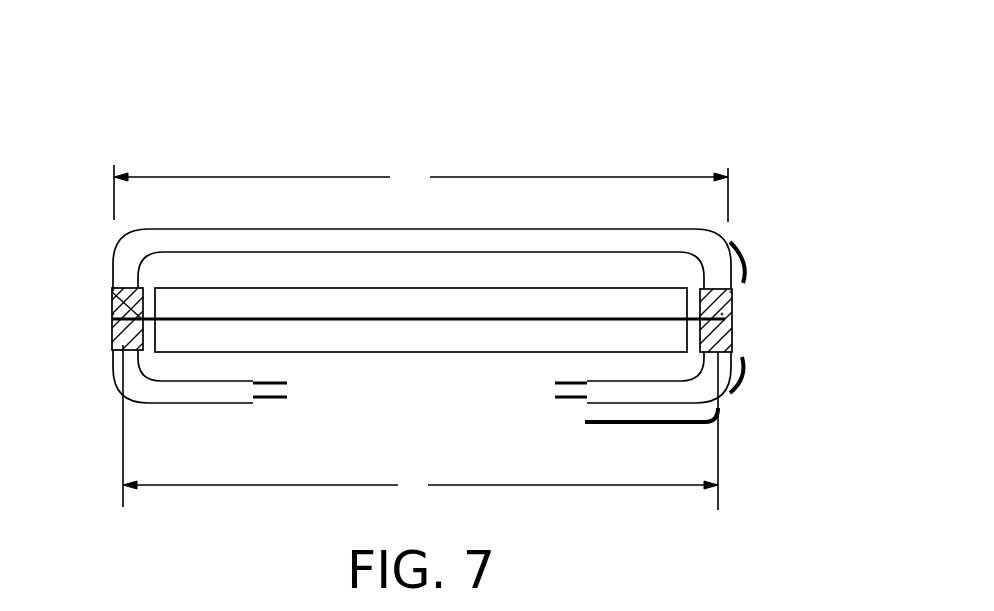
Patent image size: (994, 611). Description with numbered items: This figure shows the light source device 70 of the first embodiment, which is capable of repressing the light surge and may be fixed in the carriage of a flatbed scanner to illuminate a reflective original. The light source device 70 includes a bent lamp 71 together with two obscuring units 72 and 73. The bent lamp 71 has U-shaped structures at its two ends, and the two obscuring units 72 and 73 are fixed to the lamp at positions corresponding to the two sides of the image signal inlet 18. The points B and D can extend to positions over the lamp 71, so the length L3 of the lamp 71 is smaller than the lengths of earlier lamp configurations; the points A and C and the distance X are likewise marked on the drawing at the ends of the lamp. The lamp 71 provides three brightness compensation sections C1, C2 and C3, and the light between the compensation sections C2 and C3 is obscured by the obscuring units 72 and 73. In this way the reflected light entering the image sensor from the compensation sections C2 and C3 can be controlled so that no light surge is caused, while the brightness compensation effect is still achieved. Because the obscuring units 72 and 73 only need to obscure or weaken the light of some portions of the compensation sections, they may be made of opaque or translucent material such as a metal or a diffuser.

The light source device 70 is at (598, 115).
The bent lamp 71 is at (517, 243).
The image signal inlet 18 is at (290, 300).
The obscuring unit 72 is at (113, 343).
The obscuring unit 73 is at (732, 335).
The point A is at (112, 289).
The point B is at (112, 313).
The point C is at (732, 292).
The point D is at (723, 313).
The brightness compensation section C1 is at (668, 425).
The brightness compensation section C2 is at (745, 380).
The brightness compensation section C3 is at (742, 250).
The length L3 is at (421, 193).
The distance X is at (420, 427).